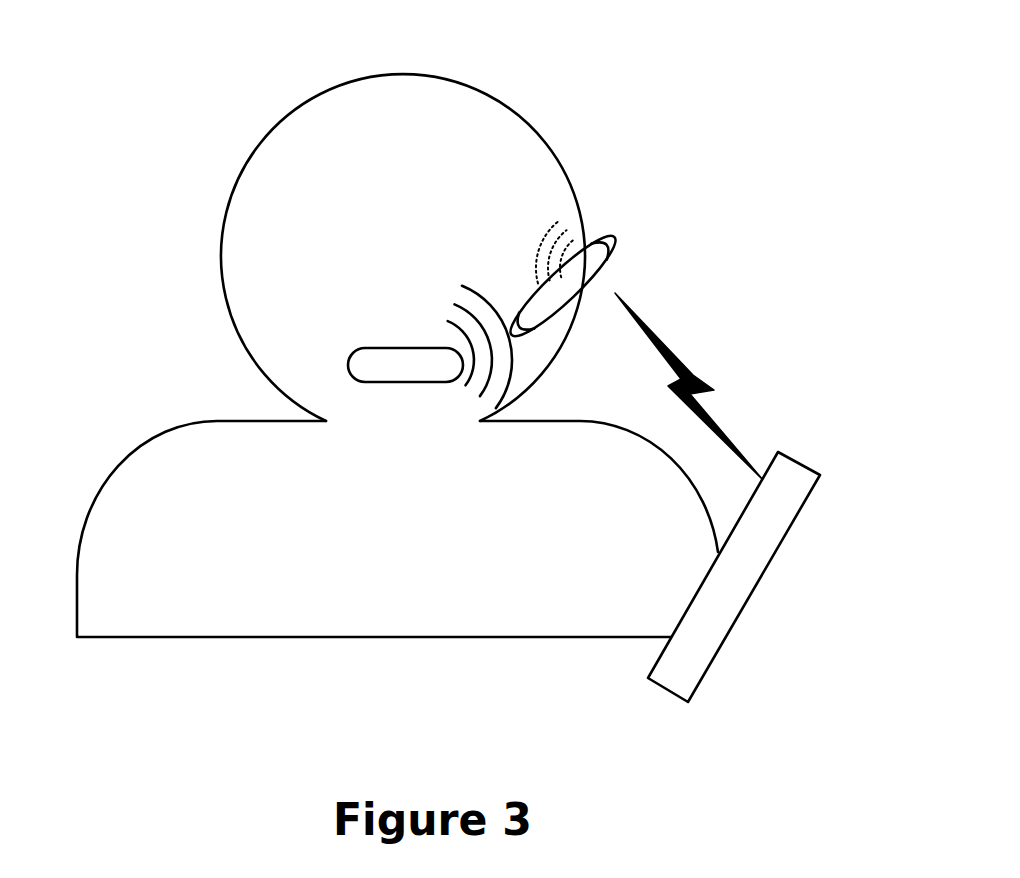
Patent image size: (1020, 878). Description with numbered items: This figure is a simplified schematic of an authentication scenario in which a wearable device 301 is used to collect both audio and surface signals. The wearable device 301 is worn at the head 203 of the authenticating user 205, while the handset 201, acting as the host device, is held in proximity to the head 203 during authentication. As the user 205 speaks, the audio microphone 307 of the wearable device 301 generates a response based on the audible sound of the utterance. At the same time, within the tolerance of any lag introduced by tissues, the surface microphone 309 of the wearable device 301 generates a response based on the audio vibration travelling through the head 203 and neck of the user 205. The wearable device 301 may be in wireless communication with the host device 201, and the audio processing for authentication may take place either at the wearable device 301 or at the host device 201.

The handset 201 is at (792, 455).
The head 203 is at (520, 117).
The authenticating user 205 is at (274, 73).
The wearable device 301 is at (613, 238).
The audio microphone 307 is at (537, 328).
The surface microphone 309 is at (607, 262).